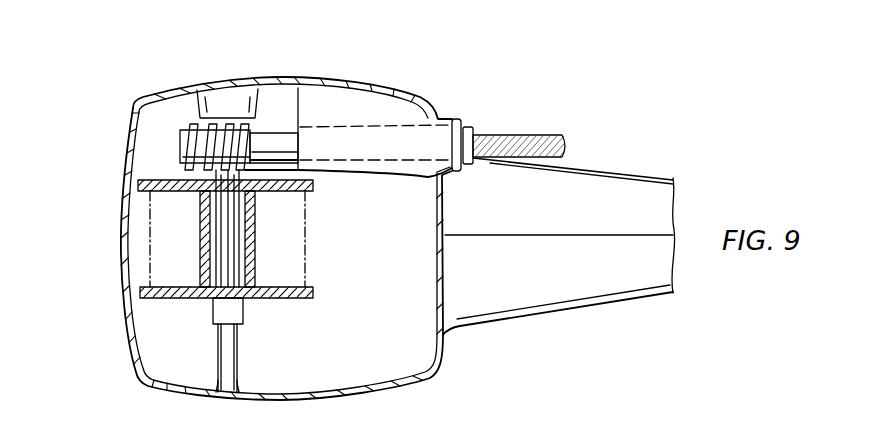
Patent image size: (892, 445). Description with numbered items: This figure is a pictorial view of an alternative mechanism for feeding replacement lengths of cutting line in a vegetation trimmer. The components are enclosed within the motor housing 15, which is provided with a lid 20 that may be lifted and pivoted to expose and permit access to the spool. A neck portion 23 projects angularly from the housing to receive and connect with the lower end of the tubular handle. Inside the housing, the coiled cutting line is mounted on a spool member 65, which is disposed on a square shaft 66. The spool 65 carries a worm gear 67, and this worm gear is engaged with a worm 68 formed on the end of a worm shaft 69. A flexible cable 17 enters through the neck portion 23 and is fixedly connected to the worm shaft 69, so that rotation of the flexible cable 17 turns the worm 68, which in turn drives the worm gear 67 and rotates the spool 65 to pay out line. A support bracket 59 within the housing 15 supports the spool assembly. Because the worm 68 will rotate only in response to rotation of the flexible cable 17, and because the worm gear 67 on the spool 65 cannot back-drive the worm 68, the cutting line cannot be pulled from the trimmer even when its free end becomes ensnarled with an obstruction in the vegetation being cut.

The motor housing 15 is at (125, 161).
The lid 20 is at (125, 337).
The worm 68 is at (190, 126).
The worm gear 67 is at (266, 147).
The worm shaft 69 is at (367, 125).
The flexible cable 17 is at (528, 134).
The neck portion 23 is at (622, 302).
The square shaft 66 is at (232, 258).
The spool member 65 is at (302, 298).
The support bracket 59 is at (240, 361).